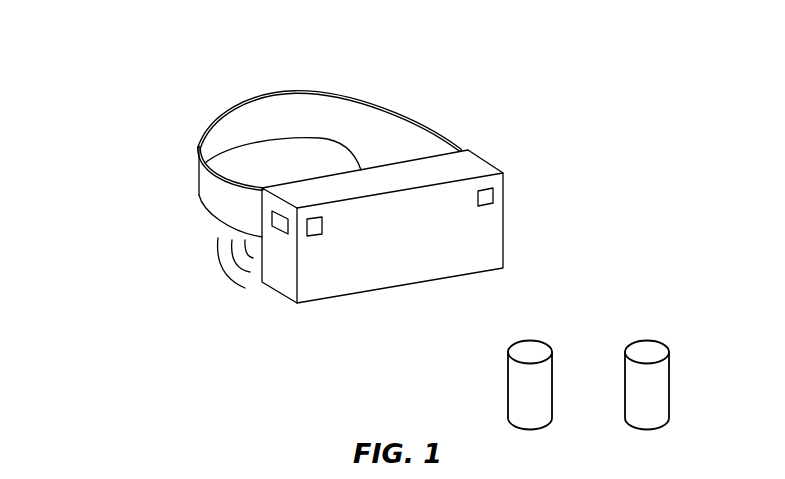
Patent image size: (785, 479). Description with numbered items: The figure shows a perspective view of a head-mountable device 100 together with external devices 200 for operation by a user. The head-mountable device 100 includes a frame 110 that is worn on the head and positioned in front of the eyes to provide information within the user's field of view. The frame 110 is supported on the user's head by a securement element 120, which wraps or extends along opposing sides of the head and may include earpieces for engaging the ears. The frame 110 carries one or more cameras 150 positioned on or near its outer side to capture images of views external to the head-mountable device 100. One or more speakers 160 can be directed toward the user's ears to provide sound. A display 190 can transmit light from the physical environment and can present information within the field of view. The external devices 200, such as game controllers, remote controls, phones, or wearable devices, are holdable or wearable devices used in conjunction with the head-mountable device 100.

The head-mountable device 100 is at (110, 2).
The frame 110 is at (488, 160).
The securement element 120 is at (232, 134).
The cameras 150 is at (313, 218).
The speakers 160 is at (262, 213).
The display 190 is at (359, 168).
The external devices 200 is at (530, 342).